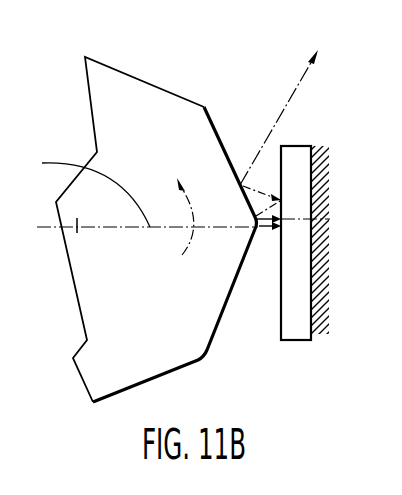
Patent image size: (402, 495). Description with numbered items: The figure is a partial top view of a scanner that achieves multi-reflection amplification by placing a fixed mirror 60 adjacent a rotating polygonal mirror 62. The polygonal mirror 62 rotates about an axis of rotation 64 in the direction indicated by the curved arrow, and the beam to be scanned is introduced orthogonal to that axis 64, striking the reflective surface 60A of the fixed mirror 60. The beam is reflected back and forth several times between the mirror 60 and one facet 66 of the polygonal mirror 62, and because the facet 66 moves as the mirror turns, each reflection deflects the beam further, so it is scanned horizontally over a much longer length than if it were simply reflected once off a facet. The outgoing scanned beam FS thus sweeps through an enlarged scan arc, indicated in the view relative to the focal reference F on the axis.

The mirror 60 is at (291, 235).
The reflecting surface of mirror 60A is at (281, 306).
The prism 62 is at (110, 99).
The pivot point on optical axis 64 is at (76, 229).
The reflecting faces of prism 66 is at (220, 138).
The focal point F is at (89, 189).
The scanned beam FS is at (298, 86).